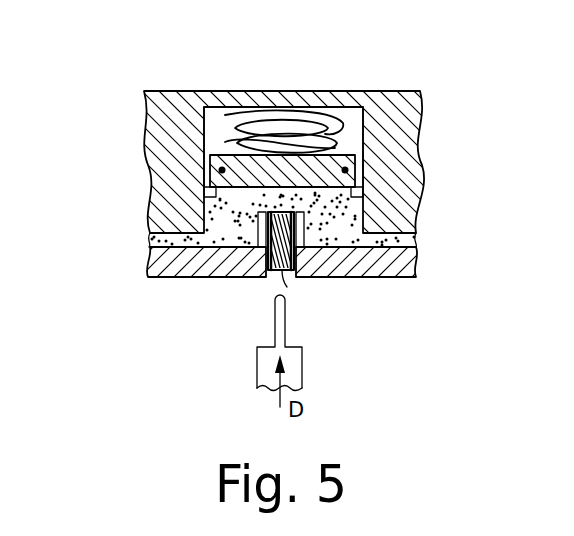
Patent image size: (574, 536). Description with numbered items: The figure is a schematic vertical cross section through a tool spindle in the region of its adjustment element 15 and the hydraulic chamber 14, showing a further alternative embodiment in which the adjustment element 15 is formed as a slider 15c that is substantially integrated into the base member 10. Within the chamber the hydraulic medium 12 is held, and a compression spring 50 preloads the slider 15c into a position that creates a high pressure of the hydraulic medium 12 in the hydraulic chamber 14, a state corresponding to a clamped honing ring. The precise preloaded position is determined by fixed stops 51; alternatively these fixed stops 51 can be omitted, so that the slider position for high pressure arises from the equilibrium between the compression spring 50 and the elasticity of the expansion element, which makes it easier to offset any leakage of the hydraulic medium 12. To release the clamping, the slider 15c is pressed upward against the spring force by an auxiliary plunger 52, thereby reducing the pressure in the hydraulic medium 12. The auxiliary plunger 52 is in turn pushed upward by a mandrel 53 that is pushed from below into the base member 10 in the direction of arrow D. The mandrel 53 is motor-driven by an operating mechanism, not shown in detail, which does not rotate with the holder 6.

The holder 6 is at (125, 88).
The base member 10 is at (173, 279).
The hydraulic medium 12 is at (340, 213).
The hydraulic chamber 14 is at (234, 225).
The adjustment element 15 is at (284, 122).
The slider 15c is at (347, 169).
The compression spring 50 is at (262, 118).
The fixed stops 51 is at (205, 192).
The auxiliary plunger 52 is at (287, 287).
The mandrel 53 is at (281, 320).